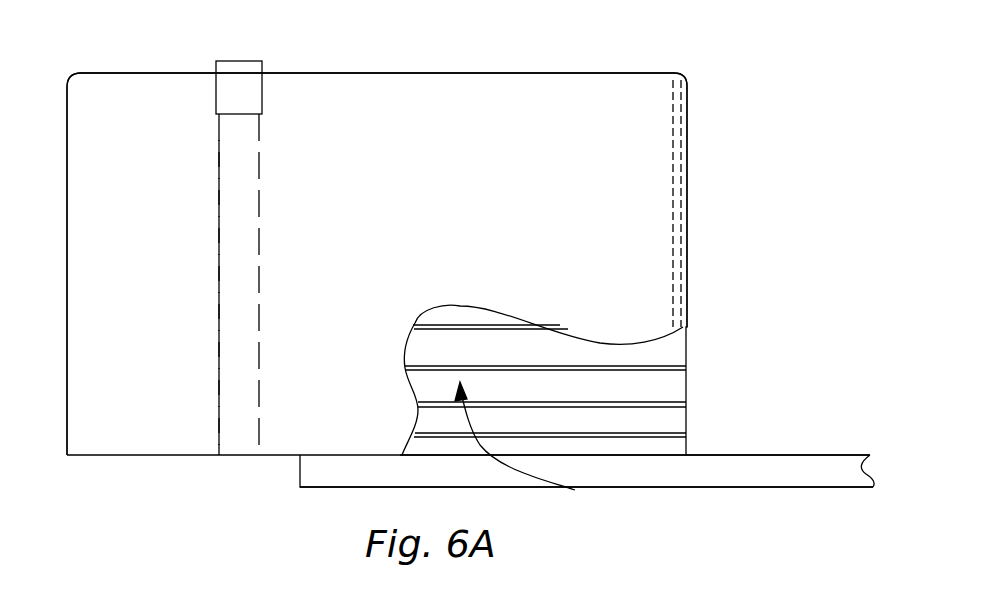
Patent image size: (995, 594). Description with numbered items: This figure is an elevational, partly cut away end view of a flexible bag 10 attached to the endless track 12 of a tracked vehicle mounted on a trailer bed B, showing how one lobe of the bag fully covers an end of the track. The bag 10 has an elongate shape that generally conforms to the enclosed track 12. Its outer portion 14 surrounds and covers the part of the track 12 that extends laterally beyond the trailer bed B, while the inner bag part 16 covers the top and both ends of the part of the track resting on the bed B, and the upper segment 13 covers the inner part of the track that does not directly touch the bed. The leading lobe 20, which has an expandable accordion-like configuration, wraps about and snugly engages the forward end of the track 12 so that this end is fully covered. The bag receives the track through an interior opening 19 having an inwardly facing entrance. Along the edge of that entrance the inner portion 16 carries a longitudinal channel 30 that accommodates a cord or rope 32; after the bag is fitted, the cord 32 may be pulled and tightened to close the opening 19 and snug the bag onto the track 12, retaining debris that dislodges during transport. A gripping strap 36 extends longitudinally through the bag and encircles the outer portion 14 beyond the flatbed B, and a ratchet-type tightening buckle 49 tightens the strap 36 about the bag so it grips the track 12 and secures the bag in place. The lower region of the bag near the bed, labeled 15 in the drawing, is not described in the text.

The flexible bag 10 is at (647, 73).
The endless track 12 is at (686, 392).
The upper segment 13 is at (427, 73).
The outer portion 14 is at (66, 160).
The bottom wall 15 is at (280, 457).
The inner bag part 16 is at (688, 89).
The interior opening 19 is at (538, 458).
The leading lobe 20 is at (401, 212).
The longitudinal channel 30 is at (673, 223).
The cord 32 is at (683, 186).
The gripping strap 36 is at (218, 289).
The ratchet-type tightening buckle 49 is at (215, 62).
The trailer bed B is at (800, 455).